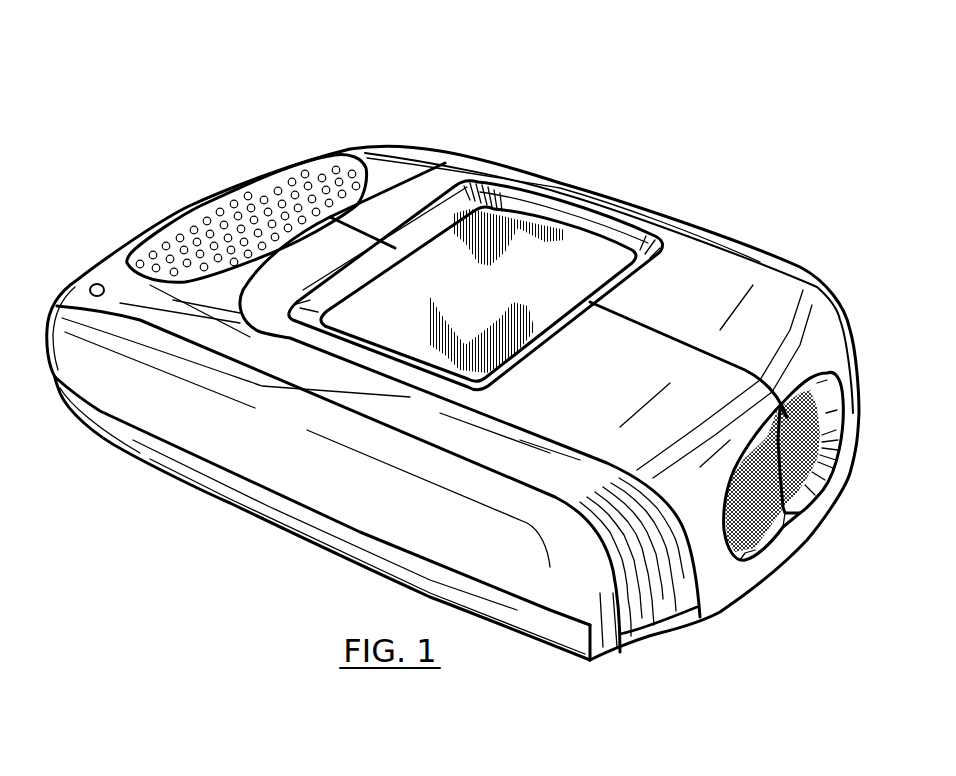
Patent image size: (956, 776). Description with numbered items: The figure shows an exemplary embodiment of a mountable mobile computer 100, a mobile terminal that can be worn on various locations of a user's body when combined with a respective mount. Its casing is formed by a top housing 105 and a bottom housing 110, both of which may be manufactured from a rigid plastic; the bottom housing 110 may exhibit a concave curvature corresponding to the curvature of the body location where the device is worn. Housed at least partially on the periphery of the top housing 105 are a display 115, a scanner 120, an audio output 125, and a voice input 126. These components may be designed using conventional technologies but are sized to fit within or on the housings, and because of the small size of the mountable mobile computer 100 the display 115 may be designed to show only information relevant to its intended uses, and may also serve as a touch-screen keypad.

The mountable mobile computer 100 is at (465, 95).
The top housing 105 is at (203, 427).
The bottom housing 110 is at (312, 545).
The display 115 is at (553, 243).
The scanner 120 is at (750, 558).
The audio output 125 is at (197, 240).
The voice input 126 is at (93, 286).